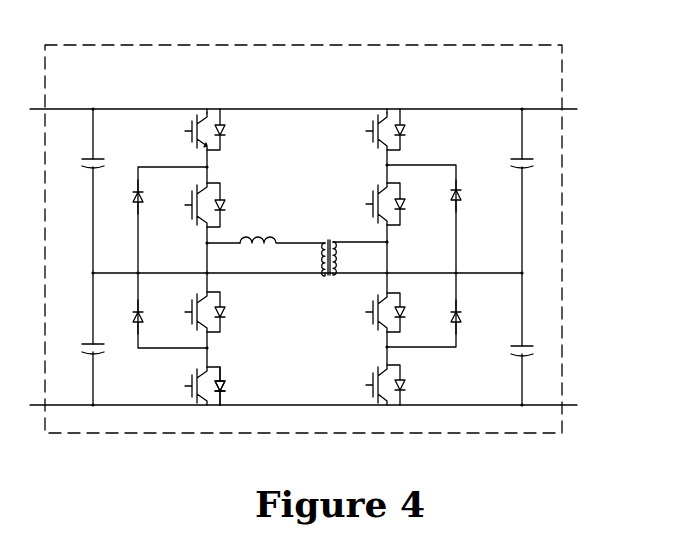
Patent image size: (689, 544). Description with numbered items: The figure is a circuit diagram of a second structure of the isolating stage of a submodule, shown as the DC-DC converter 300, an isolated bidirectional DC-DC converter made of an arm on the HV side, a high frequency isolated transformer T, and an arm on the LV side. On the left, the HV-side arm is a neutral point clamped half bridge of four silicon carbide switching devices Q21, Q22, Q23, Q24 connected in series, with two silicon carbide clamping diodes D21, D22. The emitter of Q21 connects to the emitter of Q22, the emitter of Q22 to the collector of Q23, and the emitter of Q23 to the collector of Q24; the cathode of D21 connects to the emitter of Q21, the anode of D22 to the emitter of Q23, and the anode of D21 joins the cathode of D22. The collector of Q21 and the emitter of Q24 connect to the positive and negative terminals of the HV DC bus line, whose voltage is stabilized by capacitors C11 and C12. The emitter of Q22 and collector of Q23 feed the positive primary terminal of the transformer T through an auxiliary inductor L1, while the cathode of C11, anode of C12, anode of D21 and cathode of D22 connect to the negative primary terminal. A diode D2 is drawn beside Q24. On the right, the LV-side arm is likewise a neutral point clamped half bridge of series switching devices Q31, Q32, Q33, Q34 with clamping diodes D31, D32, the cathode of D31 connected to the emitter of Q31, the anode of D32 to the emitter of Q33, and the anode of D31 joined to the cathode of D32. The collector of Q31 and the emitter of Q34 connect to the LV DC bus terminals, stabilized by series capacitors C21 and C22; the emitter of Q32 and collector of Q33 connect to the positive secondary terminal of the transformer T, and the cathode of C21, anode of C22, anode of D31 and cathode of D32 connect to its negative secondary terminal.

The DC-DC converter 300 is at (303, 239).
The capacitor C11 is at (75, 164).
The capacitor C12 is at (75, 353).
The capacitor C21 is at (501, 169).
The capacitor C22 is at (501, 356).
The switching device Q21 is at (187, 129).
The switching device Q22 is at (191, 205).
The switching device Q23 is at (191, 313).
The switching device Q24 is at (186, 386).
The switching device Q31 is at (371, 131).
The switching device Q32 is at (371, 204).
The switching device Q33 is at (371, 313).
The switching device Q34 is at (371, 386).
The clamping diode D21 is at (122, 198).
The clamping diode D22 is at (122, 317).
The clamping diode D31 is at (439, 199).
The clamping diode D32 is at (439, 317).
The anti-parallel diode D2 is at (233, 386).
The auxiliary inductor L1 is at (282, 252).
The high frequency isolated transformer T is at (319, 258).